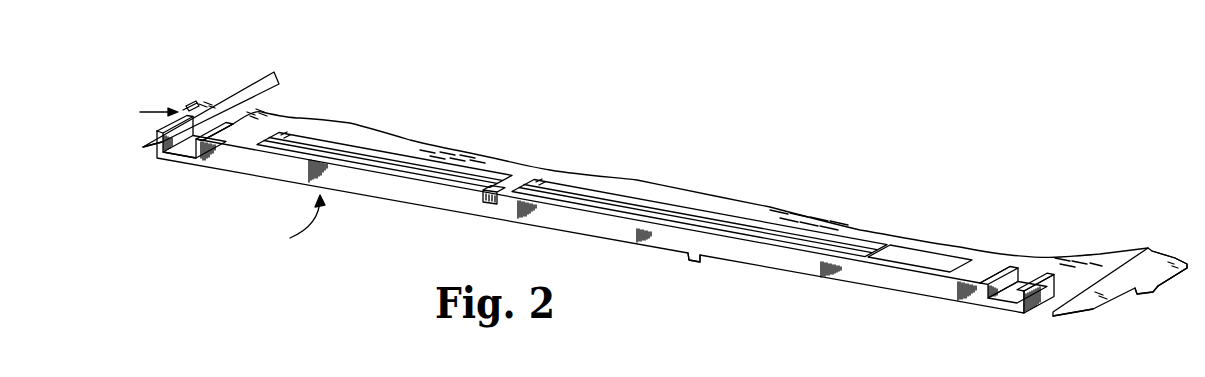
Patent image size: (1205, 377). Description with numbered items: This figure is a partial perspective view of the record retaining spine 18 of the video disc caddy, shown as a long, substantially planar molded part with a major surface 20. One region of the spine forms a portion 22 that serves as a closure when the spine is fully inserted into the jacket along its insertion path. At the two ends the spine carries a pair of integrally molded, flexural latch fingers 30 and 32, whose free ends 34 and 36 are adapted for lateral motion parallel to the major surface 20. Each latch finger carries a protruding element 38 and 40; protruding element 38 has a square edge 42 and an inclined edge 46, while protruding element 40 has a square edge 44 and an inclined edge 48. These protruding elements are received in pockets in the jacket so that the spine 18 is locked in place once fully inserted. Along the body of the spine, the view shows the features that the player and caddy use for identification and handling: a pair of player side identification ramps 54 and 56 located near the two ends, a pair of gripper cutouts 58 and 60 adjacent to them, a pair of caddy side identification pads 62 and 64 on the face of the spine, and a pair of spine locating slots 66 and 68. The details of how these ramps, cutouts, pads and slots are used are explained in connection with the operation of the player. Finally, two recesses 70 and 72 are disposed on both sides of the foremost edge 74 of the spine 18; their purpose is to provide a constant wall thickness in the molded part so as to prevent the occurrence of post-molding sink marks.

The record retaining spine 18 is at (291, 221).
The major surface 20 is at (720, 207).
The portion 22 is at (815, 277).
The flexural latch finger 30 is at (1172, 257).
The flexural latch finger 32 is at (250, 85).
The free end 34 is at (1086, 313).
The free end 36 is at (143, 147).
The protruding element 38 is at (1142, 277).
The protruding element 40 is at (187, 112).
The square edge 42 is at (1150, 295).
The square edge 44 is at (147, 103).
The inclined edge 46 is at (1160, 286).
The inclined edge 48 is at (190, 104).
The player side identification ramp 54 is at (999, 300).
The player side identification ramp 56 is at (183, 148).
The gripper cutout 58 is at (978, 265).
The gripper cutout 60 is at (257, 133).
The caddy side identification pad 62 is at (902, 248).
The caddy side identification pad 64 is at (398, 206).
The spine locating slot 66 is at (694, 258).
The spine locating slot 68 is at (520, 185).
The recess 70 is at (352, 160).
The recess 72 is at (614, 209).
The foremost edge 74 is at (513, 215).